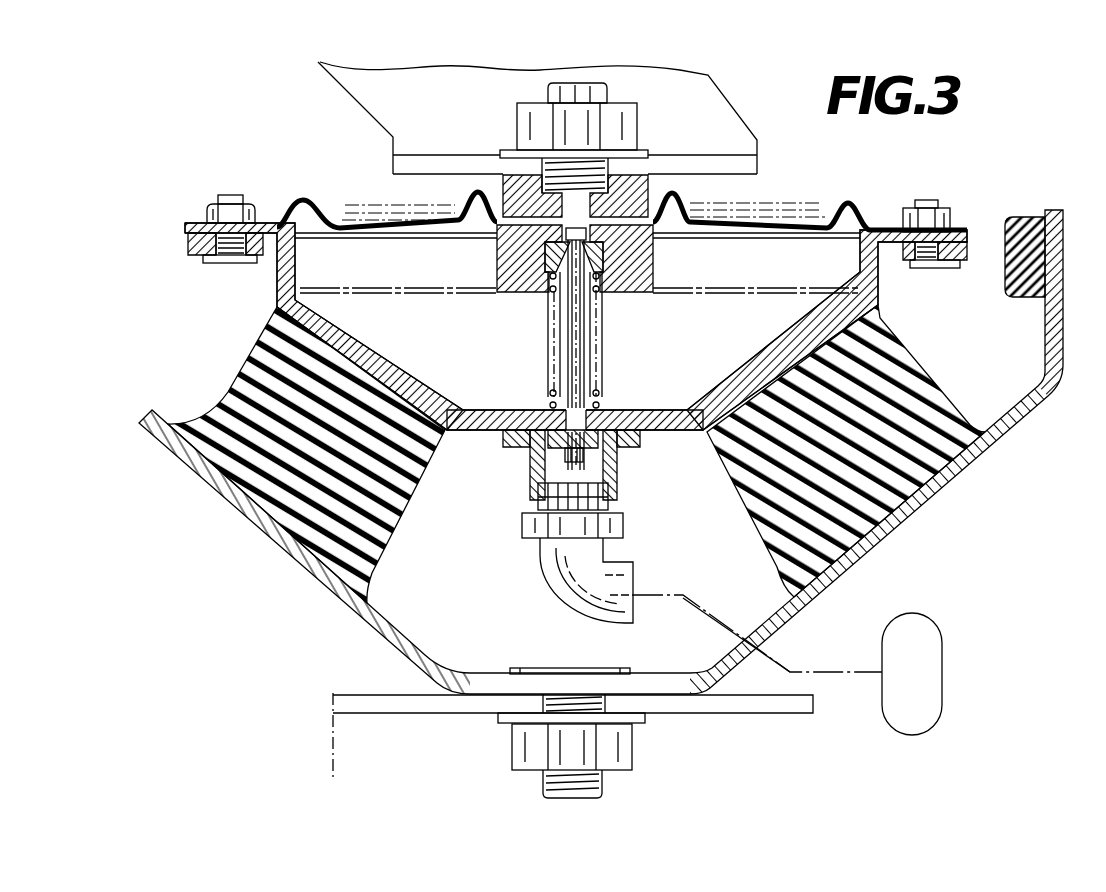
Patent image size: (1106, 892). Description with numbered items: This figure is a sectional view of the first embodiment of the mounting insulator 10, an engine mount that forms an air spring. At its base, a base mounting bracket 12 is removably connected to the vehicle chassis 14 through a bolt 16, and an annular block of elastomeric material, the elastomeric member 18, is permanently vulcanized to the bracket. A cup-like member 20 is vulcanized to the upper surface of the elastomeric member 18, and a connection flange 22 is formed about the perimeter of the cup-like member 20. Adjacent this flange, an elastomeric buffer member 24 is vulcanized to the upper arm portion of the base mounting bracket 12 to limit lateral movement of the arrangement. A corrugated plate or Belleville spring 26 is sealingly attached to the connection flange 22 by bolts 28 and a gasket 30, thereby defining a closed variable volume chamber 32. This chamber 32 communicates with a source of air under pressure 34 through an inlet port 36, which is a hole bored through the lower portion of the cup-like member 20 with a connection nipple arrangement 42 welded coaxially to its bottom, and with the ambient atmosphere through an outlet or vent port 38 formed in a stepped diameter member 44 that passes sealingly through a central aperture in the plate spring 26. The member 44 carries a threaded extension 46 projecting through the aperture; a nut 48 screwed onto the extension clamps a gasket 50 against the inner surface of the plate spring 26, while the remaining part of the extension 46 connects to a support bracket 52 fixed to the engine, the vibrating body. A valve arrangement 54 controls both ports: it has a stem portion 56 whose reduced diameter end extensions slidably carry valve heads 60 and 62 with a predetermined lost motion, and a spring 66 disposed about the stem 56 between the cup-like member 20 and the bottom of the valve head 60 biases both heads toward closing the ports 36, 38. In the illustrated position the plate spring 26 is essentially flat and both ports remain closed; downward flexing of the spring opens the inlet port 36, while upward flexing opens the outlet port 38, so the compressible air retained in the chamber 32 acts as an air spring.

The mounting insulator 10 is at (203, 388).
The base mounting bracket 12 is at (197, 467).
The vehicle chassis 14 is at (320, 743).
The bolt 16 is at (607, 775).
The elastomeric member 18 is at (253, 364).
The cup-like member 20 is at (873, 280).
The connection flange 22 is at (200, 249).
The elastomeric buffer member 24 is at (1022, 226).
The corrugated plate or Belleville spring 26 is at (308, 202).
The bolts 28 is at (203, 203).
The gasket 30 is at (893, 232).
The variable volume chamber 32 is at (433, 341).
The source of fluid under pressure 34 is at (943, 680).
The inlet port 36 is at (603, 415).
The outlet or vent port 38 is at (603, 252).
The connection nipple arrangement 42 is at (530, 488).
The stepped diameter member 44 is at (503, 263).
The threaded extension 46 is at (540, 190).
The nut 48 is at (500, 181).
The gasket 50 is at (662, 230).
The support bracket 52 is at (348, 88).
The valve arrangement 54 is at (541, 362).
The stem portion 56 is at (582, 341).
The valve head 60 is at (545, 270).
The valve head 62 is at (592, 447).
The spring 66 is at (604, 376).